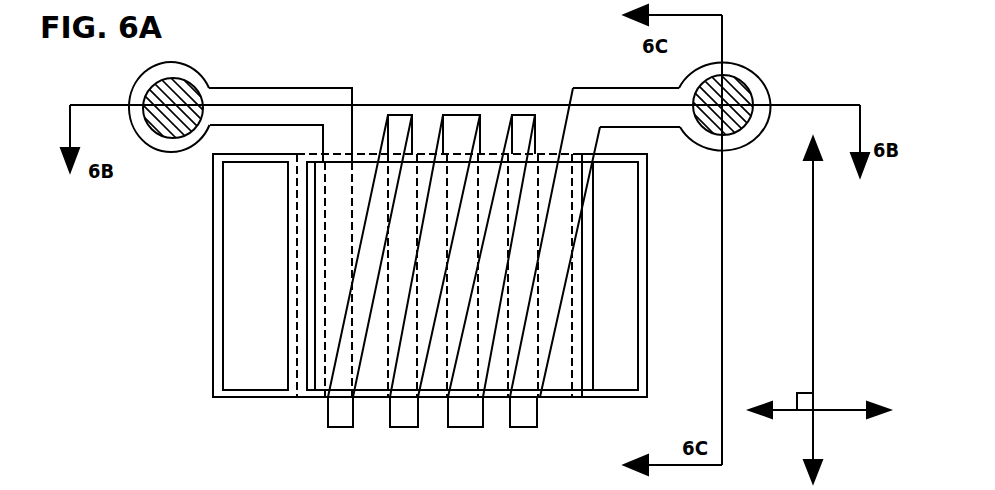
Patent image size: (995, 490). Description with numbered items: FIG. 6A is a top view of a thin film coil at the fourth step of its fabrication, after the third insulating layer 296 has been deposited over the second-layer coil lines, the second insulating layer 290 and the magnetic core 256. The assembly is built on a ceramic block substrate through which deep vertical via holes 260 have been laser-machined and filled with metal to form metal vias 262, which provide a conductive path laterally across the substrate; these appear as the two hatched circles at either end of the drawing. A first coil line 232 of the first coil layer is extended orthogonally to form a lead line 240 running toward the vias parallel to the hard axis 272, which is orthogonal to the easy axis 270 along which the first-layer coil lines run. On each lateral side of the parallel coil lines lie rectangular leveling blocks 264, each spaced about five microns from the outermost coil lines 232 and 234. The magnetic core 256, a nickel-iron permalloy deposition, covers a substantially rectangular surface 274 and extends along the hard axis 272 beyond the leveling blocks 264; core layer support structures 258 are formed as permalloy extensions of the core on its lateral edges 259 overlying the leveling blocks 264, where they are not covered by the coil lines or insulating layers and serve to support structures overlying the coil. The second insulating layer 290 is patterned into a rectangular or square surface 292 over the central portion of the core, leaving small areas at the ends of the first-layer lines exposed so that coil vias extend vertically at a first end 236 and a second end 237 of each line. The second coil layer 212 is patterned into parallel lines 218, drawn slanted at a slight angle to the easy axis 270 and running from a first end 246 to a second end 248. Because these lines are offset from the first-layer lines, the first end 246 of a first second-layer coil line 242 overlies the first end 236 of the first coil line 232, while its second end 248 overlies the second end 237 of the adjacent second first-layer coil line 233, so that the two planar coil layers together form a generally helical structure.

The second coil layer 212 is at (387, 133).
The parallel lines 218 is at (464, 259).
The first coil line 232 is at (345, 85).
The second first-layer coil line 233 is at (410, 125).
The outermost coil line 234 is at (531, 115).
The first end 236 is at (513, 118).
The second end 237 is at (350, 428).
The lead line 240 is at (250, 102).
The first second-layer coil line 242 is at (325, 380).
The first end 246 is at (398, 115).
The second end 248 is at (330, 428).
The magnetic core 256 is at (213, 293).
The core layer support structures 258 is at (221, 220).
The lateral edges 259 is at (213, 397).
The via holes 260 is at (188, 88).
The metal vias 262 is at (163, 138).
The leveling blocks 264 is at (232, 398).
The easy axis 270 is at (813, 337).
The hard axis 272 is at (823, 408).
The substantially rectangular surface 274 is at (213, 372).
The second insulating layer 290 is at (585, 318).
The rectangular or square surface 292 is at (585, 280).
The third insulating layer 296 is at (593, 188).